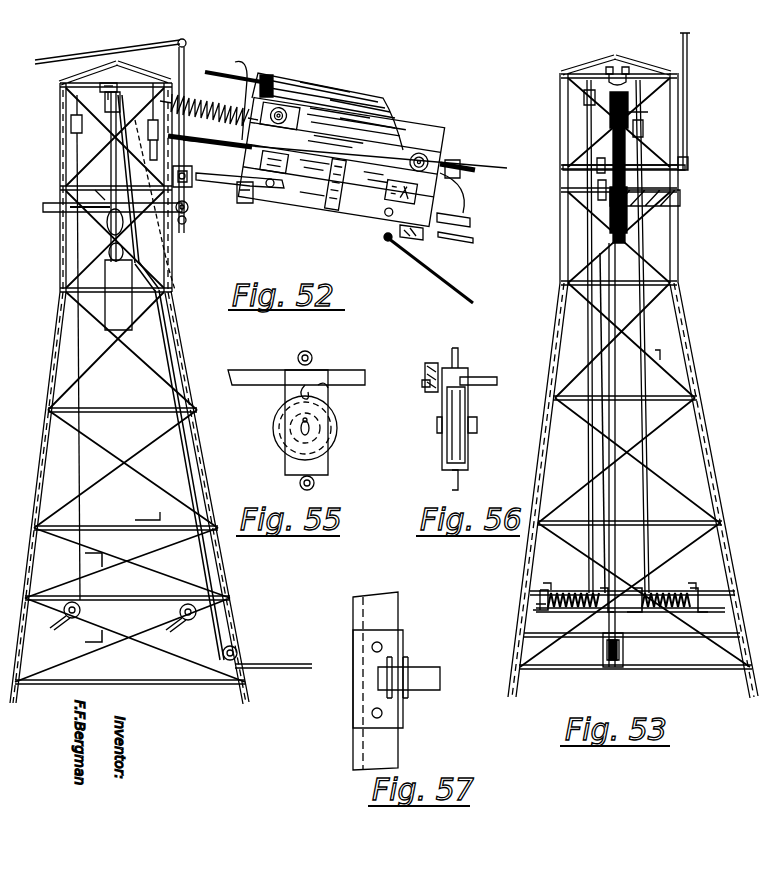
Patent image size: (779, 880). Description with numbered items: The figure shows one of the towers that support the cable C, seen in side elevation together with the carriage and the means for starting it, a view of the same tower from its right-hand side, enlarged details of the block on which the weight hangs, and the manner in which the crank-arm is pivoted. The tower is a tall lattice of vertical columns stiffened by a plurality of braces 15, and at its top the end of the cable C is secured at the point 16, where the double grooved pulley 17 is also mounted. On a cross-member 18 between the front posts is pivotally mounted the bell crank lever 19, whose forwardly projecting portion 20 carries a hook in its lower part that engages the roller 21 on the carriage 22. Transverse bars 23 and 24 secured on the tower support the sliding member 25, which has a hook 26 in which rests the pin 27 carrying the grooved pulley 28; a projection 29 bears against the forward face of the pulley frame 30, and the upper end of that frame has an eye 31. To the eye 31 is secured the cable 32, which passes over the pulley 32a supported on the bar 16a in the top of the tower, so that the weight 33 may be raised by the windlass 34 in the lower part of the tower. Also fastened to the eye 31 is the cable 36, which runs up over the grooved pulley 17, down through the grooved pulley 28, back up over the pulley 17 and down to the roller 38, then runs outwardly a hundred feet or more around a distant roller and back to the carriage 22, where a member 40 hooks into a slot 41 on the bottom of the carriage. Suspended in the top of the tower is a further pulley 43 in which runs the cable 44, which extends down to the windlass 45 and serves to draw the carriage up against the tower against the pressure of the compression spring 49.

In FIG. 52, the braces 15 is at (129, 382).
In FIG. 53, the braces 15 is at (645, 75).
In FIG. 52, the point of cable securement 16 is at (68, 92).
In FIG. 52, the bar 16a is at (104, 85).
In FIG. 53, the bar 16a is at (616, 67).
In FIG. 52, the double grooved pulley 17 is at (108, 177).
In FIG. 53, the double grooved pulley 17 is at (605, 78).
In FIG. 52, the cross-member 18 is at (187, 167).
In FIG. 57, the cross-member 18 is at (418, 675).
In FIG. 53, the cross-member 18 is at (660, 165).
In FIG. 52, the bell crank lever 19 is at (185, 60).
In FIG. 53, the bell crank lever 19 is at (690, 130).
In FIG. 52, the forwardly projecting portion 20 is at (190, 200).
In FIG. 52, the roller 21 is at (262, 200).
In FIG. 52, the carriage 22 is at (420, 125).
In FIG. 52, the transverse bar 23 is at (184, 224).
In FIG. 53, the transverse bar 23 is at (668, 212).
In FIG. 52, the transverse bar 24 is at (48, 203).
In FIG. 52, the sliding member 25 is at (105, 198).
In FIG. 52, the hook 26 is at (110, 228).
In FIG. 55, the hook 26 is at (315, 398).
In FIG. 56, the hook 26 is at (428, 395).
In FIG. 53, the hook 26 is at (590, 215).
In FIG. 55, the pin 27 is at (285, 385).
In FIG. 56, the pin 27 is at (425, 375).
In FIG. 52, the grooved pulley 28 is at (122, 248).
In FIG. 55, the grooved pulley 28 is at (335, 428).
In FIG. 56, the grooved pulley 28 is at (468, 402).
In FIG. 55, the projection 29 is at (332, 387).
In FIG. 56, the projection 29 is at (480, 377).
In FIG. 55, the pulley frame 30 is at (328, 470).
In FIG. 56, the pulley frame 30 is at (466, 368).
In FIG. 52, the eye 31 is at (80, 210).
In FIG. 55, the eye 31 is at (310, 355).
In FIG. 56, the eye 31 is at (452, 348).
In FIG. 52, the cable 32 is at (76, 407).
In FIG. 53, the cable 32 is at (585, 330).
In FIG. 52, the pulley 32a is at (71, 122).
In FIG. 53, the pulley 32a is at (585, 96).
In FIG. 52, the weight 33 is at (118, 295).
In FIG. 52, the windlass 34 is at (62, 624).
In FIG. 53, the windlass 34 is at (570, 612).
In FIG. 52, the cable 36 is at (176, 305).
In FIG. 53, the cable 36 is at (612, 395).
In FIG. 52, the roller 38 is at (240, 650).
In FIG. 53, the roller 38 is at (624, 645).
In FIG. 52, the member 40 is at (383, 236).
In FIG. 52, the slot 41 is at (420, 240).
In FIG. 52, the pulley 43 is at (140, 95).
In FIG. 53, the pulley 43 is at (645, 120).
In FIG. 52, the cable 44 is at (157, 520).
In FIG. 53, the cable 44 is at (660, 352).
In FIG. 52, the windlass 45 is at (193, 619).
In FIG. 53, the windlass 45 is at (708, 598).
In FIG. 52, the compression spring 49 is at (198, 100).
In FIG. 52, the cable C is at (505, 165).